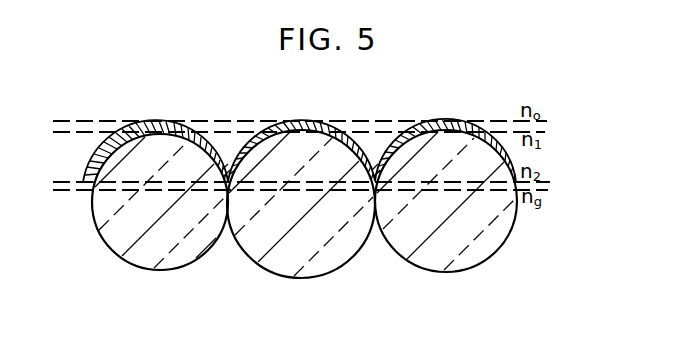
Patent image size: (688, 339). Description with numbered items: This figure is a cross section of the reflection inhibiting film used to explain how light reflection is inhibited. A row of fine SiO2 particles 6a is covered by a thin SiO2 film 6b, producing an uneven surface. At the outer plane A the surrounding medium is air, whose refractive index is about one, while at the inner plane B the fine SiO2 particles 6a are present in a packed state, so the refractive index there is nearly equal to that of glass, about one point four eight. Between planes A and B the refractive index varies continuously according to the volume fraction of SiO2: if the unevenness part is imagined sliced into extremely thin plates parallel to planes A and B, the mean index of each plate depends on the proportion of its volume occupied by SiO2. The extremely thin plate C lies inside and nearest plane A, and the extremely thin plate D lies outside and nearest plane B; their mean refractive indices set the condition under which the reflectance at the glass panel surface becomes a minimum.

The fine SiO2 particle 6a is at (502, 242).
The thin SiO2 film 6b is at (513, 152).
The plane A is at (312, 117).
The plane B is at (312, 195).
The extremely thin plate C is at (312, 139).
The extremely thin plate D is at (313, 175).